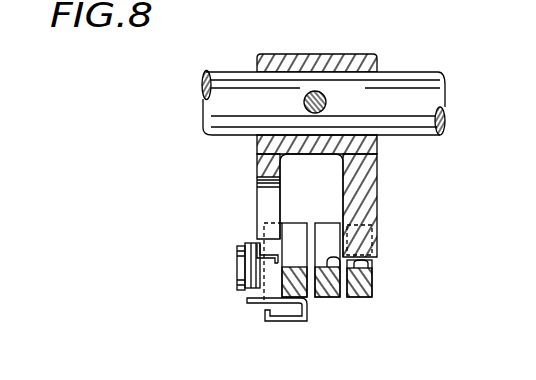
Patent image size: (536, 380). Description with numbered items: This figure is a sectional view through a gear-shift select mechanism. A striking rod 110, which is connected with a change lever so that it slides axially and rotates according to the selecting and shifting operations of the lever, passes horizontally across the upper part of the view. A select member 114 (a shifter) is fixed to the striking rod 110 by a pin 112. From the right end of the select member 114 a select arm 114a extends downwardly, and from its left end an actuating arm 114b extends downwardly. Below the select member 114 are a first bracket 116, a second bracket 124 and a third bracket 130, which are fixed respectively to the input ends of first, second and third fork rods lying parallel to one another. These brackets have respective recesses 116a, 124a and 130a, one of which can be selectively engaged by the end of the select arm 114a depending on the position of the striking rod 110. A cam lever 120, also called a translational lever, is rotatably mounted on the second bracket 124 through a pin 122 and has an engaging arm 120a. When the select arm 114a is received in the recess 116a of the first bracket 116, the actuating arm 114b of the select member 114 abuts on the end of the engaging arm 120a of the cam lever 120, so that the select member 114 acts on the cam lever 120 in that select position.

The striking rod 110 is at (198, 83).
The pin 112 is at (326, 100).
The select member 114 is at (367, 55).
The select arm 114a is at (377, 181).
The actuating arm 114b is at (255, 190).
The first bracket 116 is at (373, 283).
The recess 116a is at (377, 264).
The cam lever 120 is at (245, 295).
The engaging arm 120a is at (283, 228).
The pin 122 is at (237, 266).
The second bracket 124 is at (308, 302).
The recess 124a is at (265, 248).
The third bracket 130 is at (327, 299).
The recess 130a is at (343, 268).